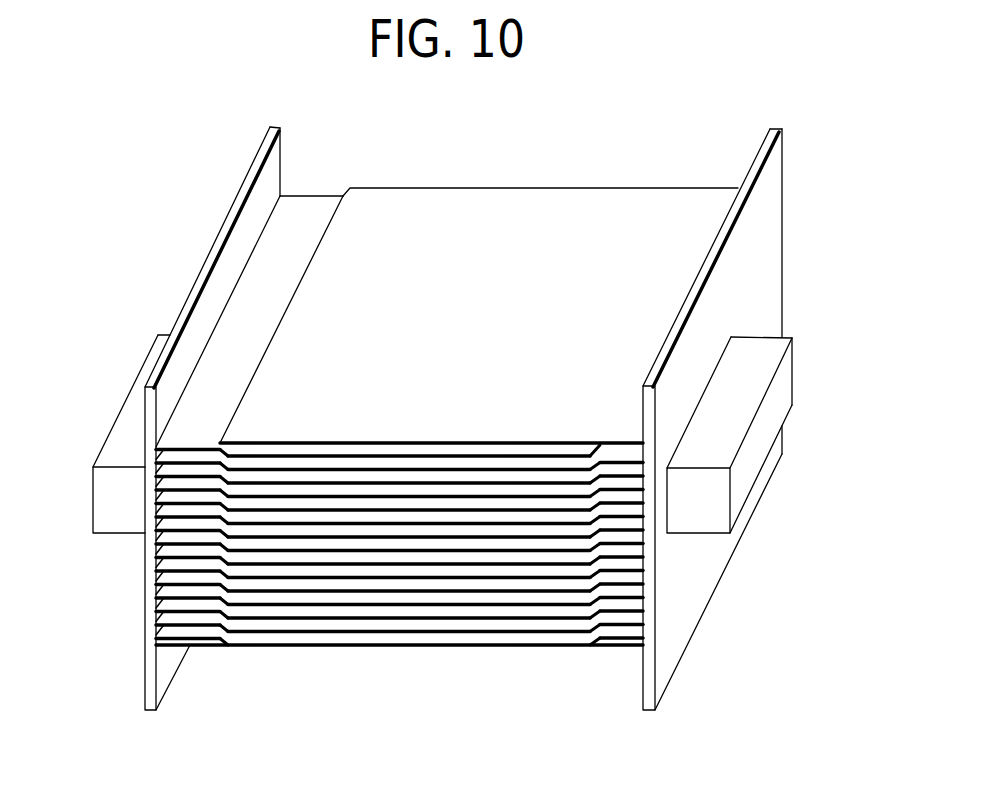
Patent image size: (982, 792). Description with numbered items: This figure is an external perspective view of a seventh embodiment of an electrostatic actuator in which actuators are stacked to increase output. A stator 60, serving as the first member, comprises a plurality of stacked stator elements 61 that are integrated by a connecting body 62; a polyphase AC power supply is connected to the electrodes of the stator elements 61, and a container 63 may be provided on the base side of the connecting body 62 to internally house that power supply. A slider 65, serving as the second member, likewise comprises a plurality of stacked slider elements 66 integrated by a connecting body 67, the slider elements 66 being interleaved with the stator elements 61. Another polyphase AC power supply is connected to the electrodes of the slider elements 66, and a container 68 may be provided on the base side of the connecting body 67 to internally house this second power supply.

The stator 60 is at (218, 210).
The stator elements 61 is at (203, 647).
The connecting body 62 is at (148, 708).
The container 63 is at (120, 522).
The slider 65 is at (637, 172).
The slider elements 66 is at (620, 641).
The connecting body 67 is at (678, 630).
The container 68 is at (762, 441).